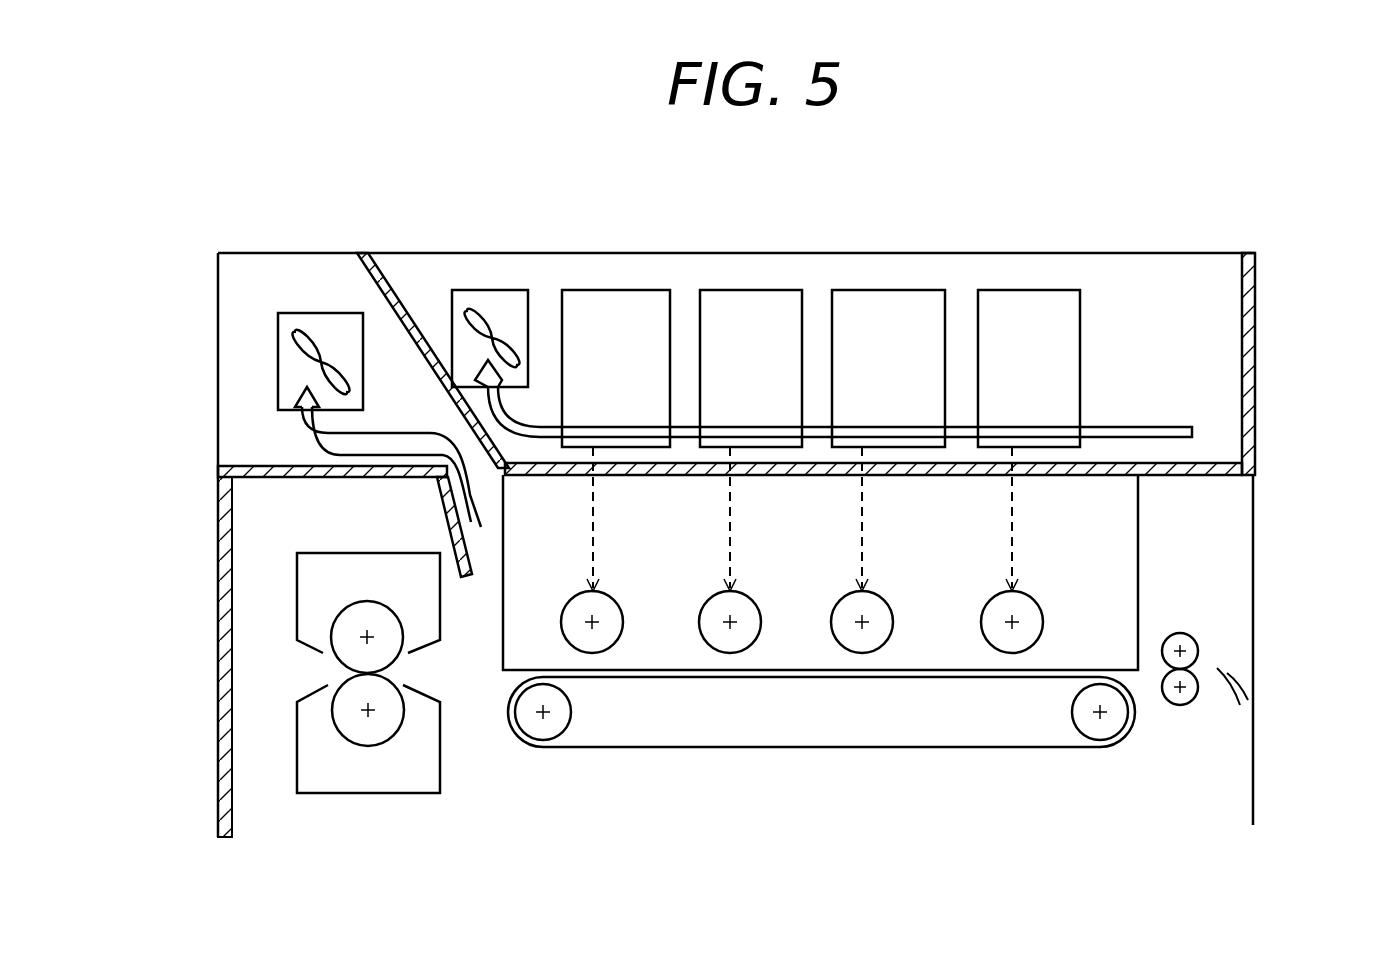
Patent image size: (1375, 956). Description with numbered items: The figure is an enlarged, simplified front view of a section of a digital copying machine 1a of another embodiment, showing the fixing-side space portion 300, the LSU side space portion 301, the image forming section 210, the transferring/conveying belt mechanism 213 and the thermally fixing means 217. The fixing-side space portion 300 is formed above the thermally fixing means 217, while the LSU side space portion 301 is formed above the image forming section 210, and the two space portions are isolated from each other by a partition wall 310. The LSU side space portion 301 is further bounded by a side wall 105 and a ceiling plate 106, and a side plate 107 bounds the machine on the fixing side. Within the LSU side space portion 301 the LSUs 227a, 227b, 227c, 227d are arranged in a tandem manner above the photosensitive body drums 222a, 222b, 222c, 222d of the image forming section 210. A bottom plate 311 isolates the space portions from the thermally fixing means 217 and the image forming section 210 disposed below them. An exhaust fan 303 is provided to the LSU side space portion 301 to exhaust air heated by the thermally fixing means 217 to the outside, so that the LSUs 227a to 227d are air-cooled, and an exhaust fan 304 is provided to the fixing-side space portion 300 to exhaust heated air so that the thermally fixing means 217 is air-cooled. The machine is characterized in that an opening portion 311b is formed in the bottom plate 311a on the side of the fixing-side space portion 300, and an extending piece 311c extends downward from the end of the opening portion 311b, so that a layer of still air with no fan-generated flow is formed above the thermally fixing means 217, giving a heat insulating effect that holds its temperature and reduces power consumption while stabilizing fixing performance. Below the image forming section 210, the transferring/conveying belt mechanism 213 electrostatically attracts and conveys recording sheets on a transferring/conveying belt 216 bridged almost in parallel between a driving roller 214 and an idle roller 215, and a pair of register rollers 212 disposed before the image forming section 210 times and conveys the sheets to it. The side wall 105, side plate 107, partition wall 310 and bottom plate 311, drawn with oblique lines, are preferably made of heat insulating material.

The digital copying machine 1a is at (1298, 370).
The side wall 105 is at (1250, 305).
The ceiling plate 106 is at (1165, 257).
The side plate 107 is at (218, 316).
The fixing-side space portion 300 is at (270, 283).
The LSU side space portion 301 is at (422, 273).
The exhaust fan 303 is at (512, 303).
The exhaust fan 304 is at (290, 370).
The partition wall 310 is at (430, 353).
The bottom plate 311 is at (1217, 460).
The bottom plate 311a is at (280, 480).
The opening portion 311b is at (448, 453).
The extending piece 311c is at (447, 508).
The image forming section 210 is at (1115, 530).
The register rollers 212 is at (1197, 650).
The transferring/conveying belt mechanism 213 is at (821, 767).
The driving roller 214 is at (543, 732).
The idle roller 215 is at (1102, 732).
The transferring/conveying belt 216 is at (853, 750).
The thermally fixing means 217 is at (313, 575).
The photosensitive body drum 222a is at (1022, 607).
The photosensitive body drum 222b is at (872, 607).
The photosensitive body drum 222c is at (740, 607).
The photosensitive body drum 222d is at (602, 607).
The LSU 227a is at (1033, 305).
The LSU 227b is at (898, 310).
The LSU 227c is at (758, 313).
The LSU 227d is at (632, 310).